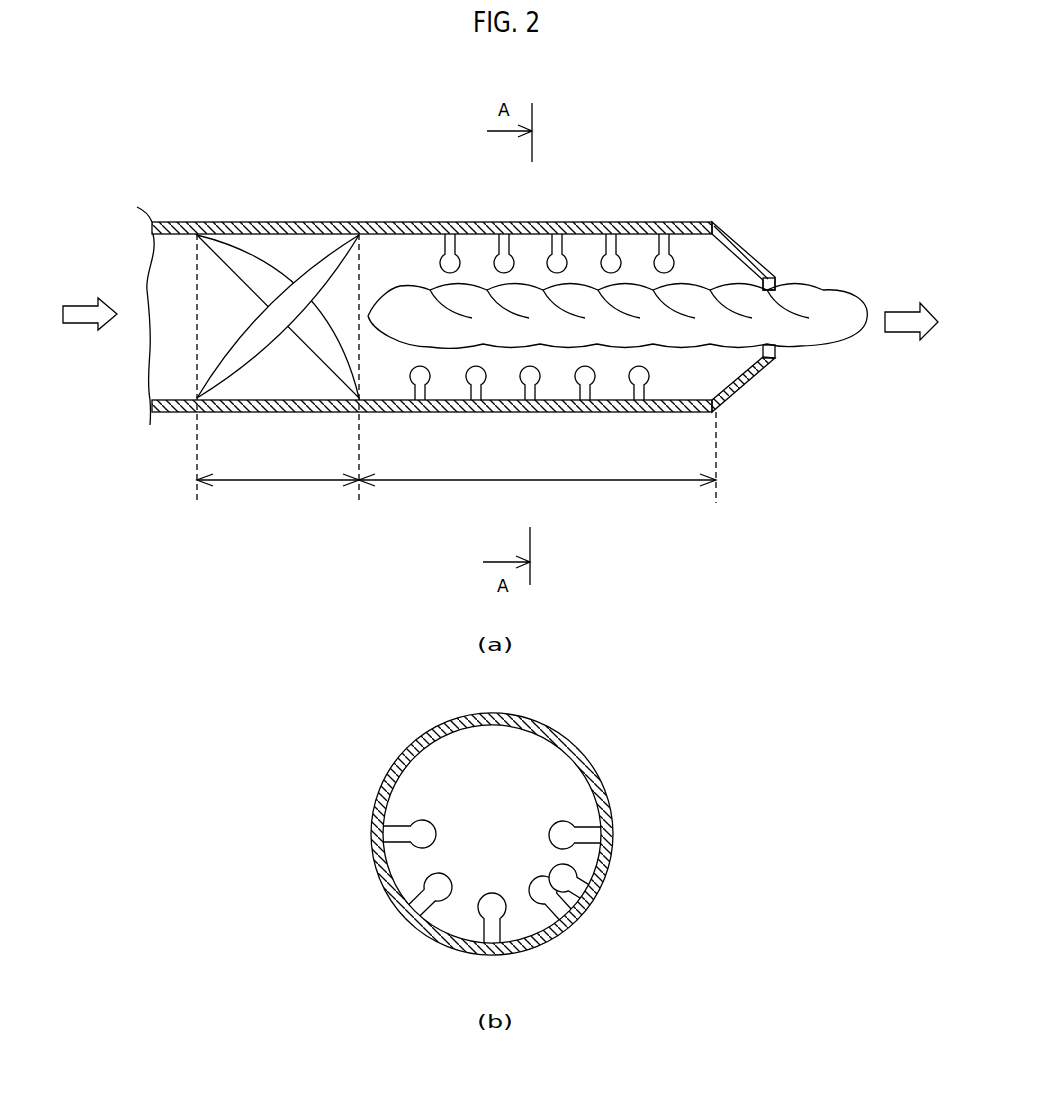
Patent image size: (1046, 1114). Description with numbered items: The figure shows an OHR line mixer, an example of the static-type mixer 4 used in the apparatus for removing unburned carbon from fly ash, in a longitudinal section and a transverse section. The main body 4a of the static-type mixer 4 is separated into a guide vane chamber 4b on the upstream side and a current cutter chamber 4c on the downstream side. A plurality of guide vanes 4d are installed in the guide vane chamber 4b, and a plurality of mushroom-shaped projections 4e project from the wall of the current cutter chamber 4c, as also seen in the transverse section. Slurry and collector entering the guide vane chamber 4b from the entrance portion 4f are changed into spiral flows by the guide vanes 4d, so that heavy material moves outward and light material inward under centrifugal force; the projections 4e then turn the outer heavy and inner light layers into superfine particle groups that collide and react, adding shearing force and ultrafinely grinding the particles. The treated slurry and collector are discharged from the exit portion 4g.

The static-type mixer 4 is at (353, 160).
The main body 4a is at (647, 222).
The guide vane chamber 4b is at (278, 376).
The current cutter chamber 4c is at (537, 465).
The guide vanes 4d is at (245, 352).
The mushroom-shaped projections 4e is at (430, 378).
The entrance portion 4f is at (166, 317).
The exit portion 4g is at (777, 352).